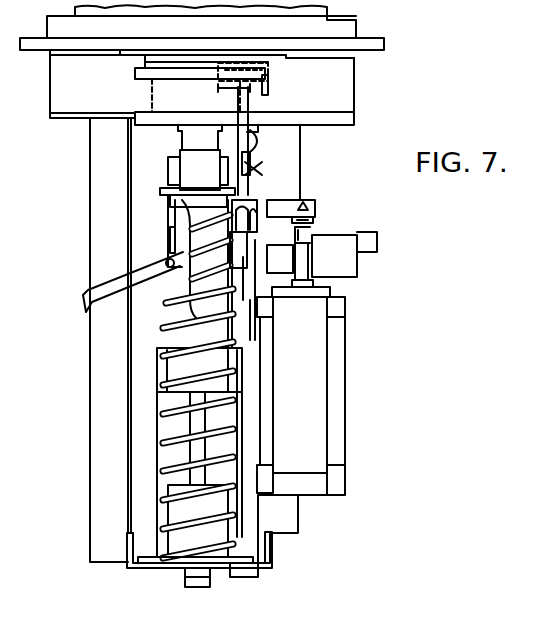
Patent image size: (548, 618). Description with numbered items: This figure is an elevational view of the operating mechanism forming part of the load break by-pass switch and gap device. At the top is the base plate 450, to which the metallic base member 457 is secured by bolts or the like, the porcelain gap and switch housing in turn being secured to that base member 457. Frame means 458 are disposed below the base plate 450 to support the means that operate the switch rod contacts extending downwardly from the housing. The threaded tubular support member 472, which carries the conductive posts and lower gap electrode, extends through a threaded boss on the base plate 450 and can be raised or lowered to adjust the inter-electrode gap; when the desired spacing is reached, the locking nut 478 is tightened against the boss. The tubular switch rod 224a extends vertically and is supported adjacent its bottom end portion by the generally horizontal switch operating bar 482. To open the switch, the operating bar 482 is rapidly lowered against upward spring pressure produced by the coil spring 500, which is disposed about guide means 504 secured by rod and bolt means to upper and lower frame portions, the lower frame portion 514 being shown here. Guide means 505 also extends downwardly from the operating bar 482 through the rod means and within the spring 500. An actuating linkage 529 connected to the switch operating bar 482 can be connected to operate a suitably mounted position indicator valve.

The metallic base member 457 is at (357, 27).
The base plate 450 is at (384, 52).
The frame means 458 is at (408, 97).
The locking nut 478 is at (135, 74).
The threaded tubular support member 472 is at (152, 95).
The switch rod contact 224a is at (172, 142).
The switch operating bar 482 is at (170, 161).
The actuating linkage 529 is at (137, 273).
The guide means 505 is at (160, 343).
The coil spring 500 is at (165, 393).
The guide means 504 is at (170, 515).
The lower frame portion 514 is at (183, 565).